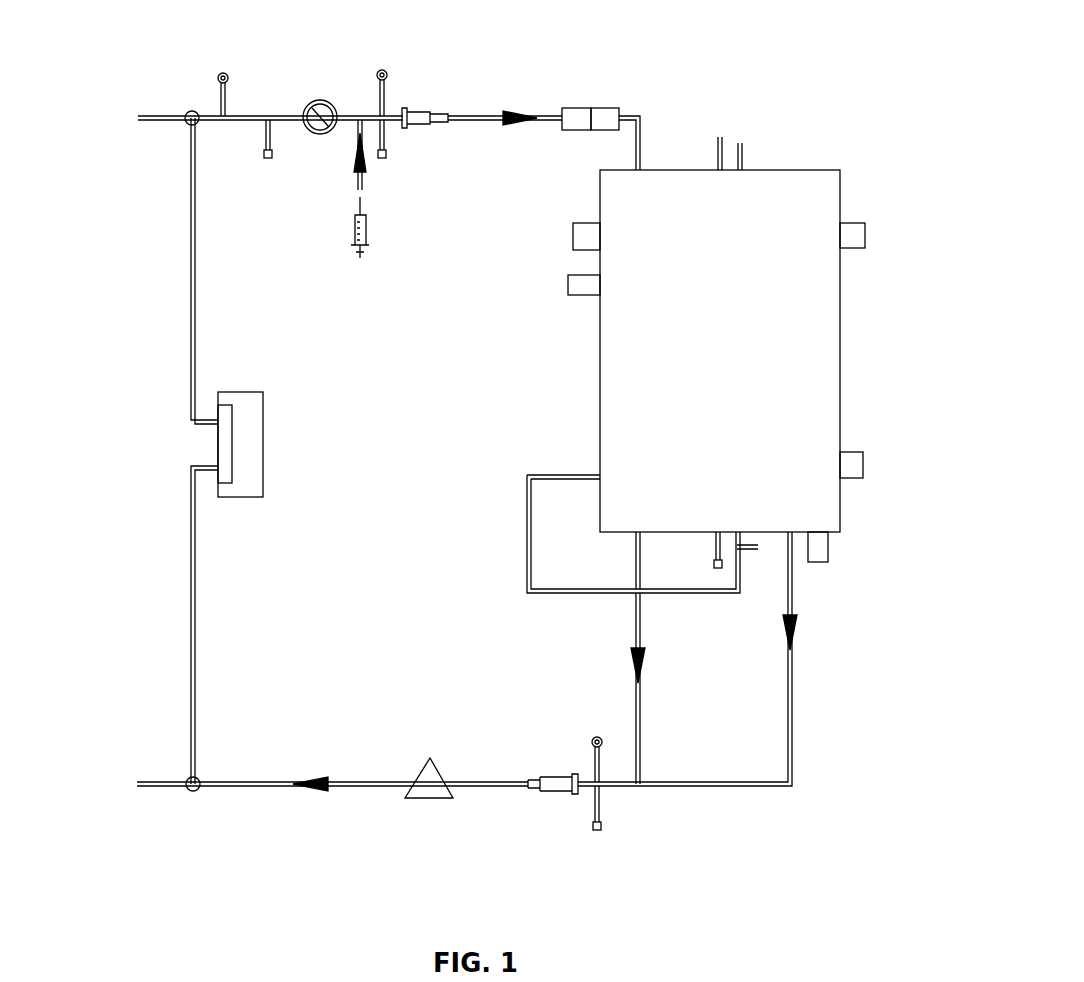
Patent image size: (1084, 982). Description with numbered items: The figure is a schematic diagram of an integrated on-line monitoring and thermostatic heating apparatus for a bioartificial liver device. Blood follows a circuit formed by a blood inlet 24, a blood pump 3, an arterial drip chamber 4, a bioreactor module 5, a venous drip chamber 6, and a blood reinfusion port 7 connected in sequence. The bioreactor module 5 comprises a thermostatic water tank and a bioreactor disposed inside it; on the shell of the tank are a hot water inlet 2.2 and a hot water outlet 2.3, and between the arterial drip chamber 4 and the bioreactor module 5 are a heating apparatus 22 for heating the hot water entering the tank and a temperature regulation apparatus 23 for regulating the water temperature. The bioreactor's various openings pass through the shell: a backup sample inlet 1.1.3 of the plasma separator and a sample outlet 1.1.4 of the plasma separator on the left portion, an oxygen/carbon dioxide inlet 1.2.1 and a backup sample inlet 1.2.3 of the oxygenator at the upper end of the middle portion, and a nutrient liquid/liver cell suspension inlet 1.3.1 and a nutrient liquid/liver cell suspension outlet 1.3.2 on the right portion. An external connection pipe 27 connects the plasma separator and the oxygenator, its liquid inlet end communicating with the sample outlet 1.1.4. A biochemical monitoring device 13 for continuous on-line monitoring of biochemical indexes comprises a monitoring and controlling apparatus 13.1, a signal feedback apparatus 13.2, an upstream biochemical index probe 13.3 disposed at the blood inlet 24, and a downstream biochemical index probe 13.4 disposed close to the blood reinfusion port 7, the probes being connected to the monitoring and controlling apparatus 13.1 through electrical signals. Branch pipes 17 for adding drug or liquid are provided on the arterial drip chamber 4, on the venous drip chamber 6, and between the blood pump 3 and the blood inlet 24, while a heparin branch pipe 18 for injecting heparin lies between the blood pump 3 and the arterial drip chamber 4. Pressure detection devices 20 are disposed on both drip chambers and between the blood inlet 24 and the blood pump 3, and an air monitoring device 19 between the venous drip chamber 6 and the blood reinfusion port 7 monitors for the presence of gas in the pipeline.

The backup sample inlet of the plasma separator 1.1.3 is at (583, 230).
The sample outlet of the plasma separator 1.1.4 is at (598, 473).
The oxygen/carbon dioxide inlet 1.2.1 is at (810, 100).
The backup sample inlet of the oxygenator 1.2.3 is at (745, 157).
The nutrient liquid/liver cell suspension inlet 1.3.1 is at (950, 253).
The nutrient liquid/liver cell suspension outlet 1.3.2 is at (925, 461).
The hot water inlet 2.2 is at (568, 295).
The hot water outlet 2.3 is at (808, 563).
The blood pump 3 is at (315, 130).
The arterial drip chamber 4 is at (422, 118).
The bioreactor module 5 is at (846, 362).
The venous drip chamber 6 is at (565, 782).
The blood reinfusion port 7 is at (137, 782).
The biochemical monitoring device 13 is at (330, 497).
The monitoring and controlling apparatus 13.1 is at (223, 447).
The signal feedback apparatus 13.2 is at (238, 488).
The upstream biochemical index probe 13.3 is at (190, 135).
The downstream biochemical index probe 13.4 is at (188, 793).
The branch pipe 17 is at (266, 157).
The heparin branch pipe 18 is at (363, 187).
The air monitoring device 19 is at (428, 780).
The pressure detection device 20 is at (227, 82).
The heating apparatus 22 is at (568, 108).
The temperature regulation apparatus 23 is at (620, 108).
The blood inlet 24 is at (137, 118).
The external connection pipe 27 is at (530, 572).